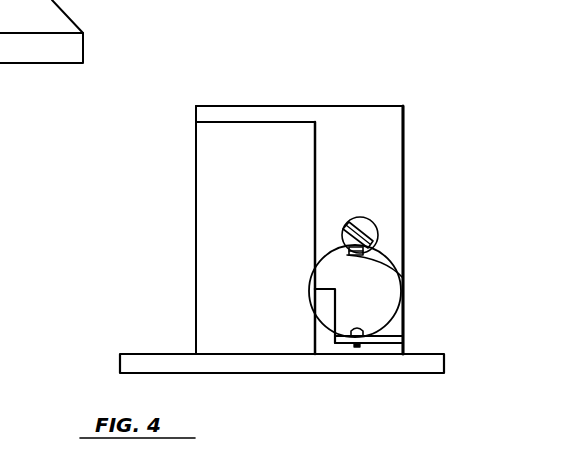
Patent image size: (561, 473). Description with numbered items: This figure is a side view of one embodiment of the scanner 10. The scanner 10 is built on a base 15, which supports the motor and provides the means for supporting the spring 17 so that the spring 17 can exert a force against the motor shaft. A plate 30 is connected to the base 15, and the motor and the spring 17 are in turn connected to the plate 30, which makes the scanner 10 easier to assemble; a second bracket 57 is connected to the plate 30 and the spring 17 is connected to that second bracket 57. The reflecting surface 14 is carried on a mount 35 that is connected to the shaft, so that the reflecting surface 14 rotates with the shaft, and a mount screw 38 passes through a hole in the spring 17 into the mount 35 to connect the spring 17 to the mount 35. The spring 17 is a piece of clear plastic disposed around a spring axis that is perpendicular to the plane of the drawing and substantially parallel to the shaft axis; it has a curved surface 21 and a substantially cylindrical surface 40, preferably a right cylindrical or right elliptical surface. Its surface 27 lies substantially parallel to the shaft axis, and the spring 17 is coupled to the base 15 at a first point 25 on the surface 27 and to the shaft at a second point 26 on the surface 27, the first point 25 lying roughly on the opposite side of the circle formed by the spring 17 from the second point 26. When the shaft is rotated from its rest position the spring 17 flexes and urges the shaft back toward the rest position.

The scanner 10 is at (246, 88).
The plate 30 is at (387, 117).
The mount 35 is at (342, 236).
The curved surface 21 is at (314, 272).
The surface 27 is at (308, 302).
The spring 17 is at (308, 288).
The cylindrical surface 40 is at (340, 248).
The reflecting surface 14 is at (378, 240).
The mount screw 38 is at (373, 247).
The second point 26 is at (365, 250).
The second bracket 57 is at (407, 337).
The first point 25 is at (355, 338).
The base 15 is at (120, 364).